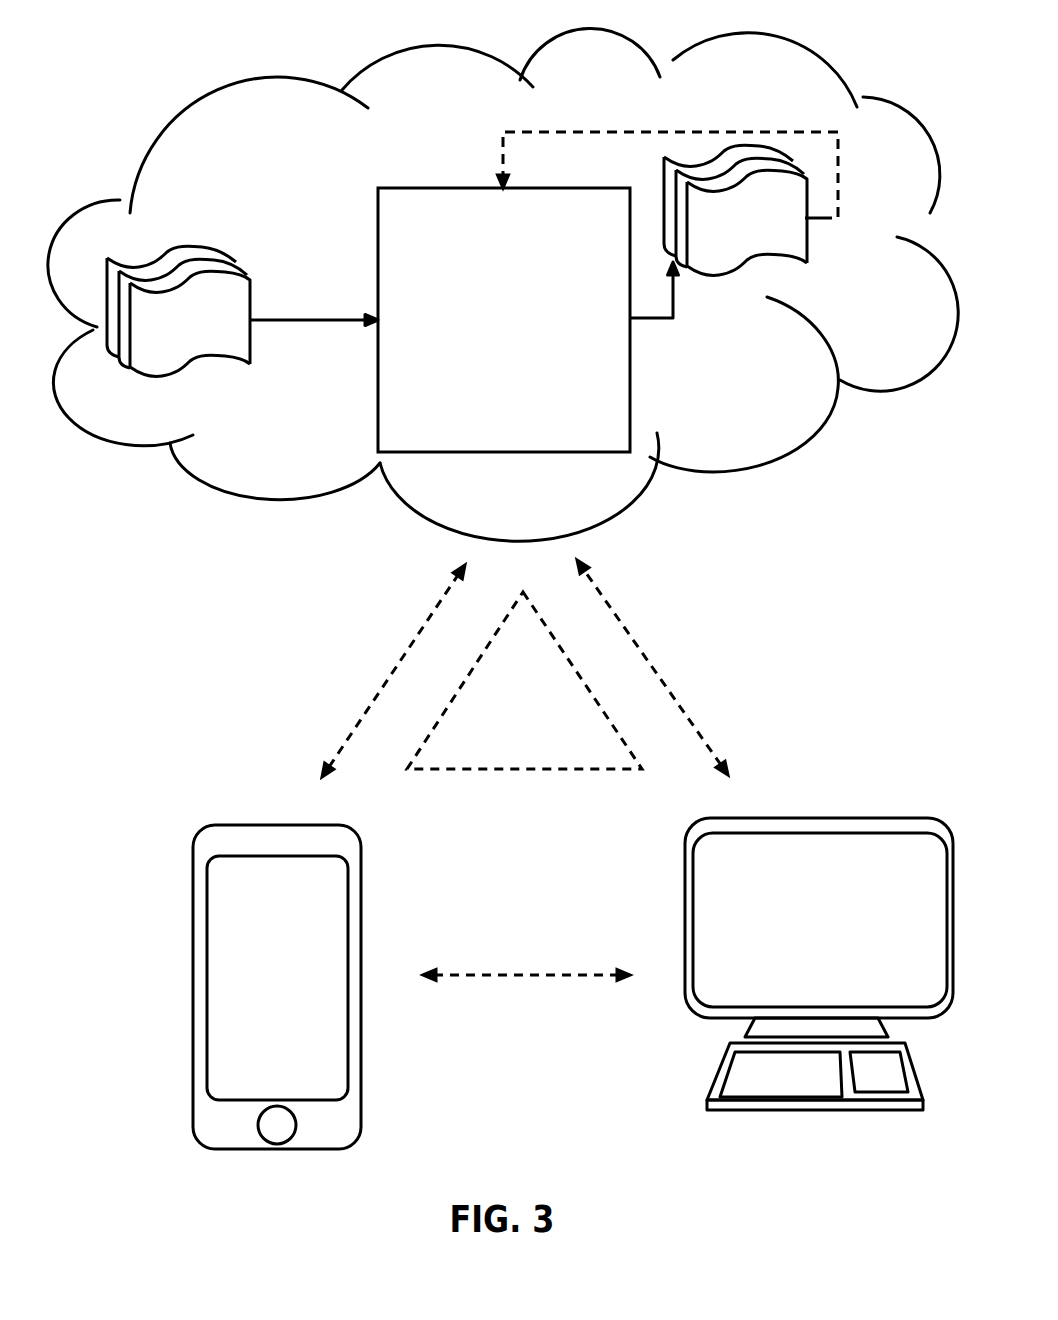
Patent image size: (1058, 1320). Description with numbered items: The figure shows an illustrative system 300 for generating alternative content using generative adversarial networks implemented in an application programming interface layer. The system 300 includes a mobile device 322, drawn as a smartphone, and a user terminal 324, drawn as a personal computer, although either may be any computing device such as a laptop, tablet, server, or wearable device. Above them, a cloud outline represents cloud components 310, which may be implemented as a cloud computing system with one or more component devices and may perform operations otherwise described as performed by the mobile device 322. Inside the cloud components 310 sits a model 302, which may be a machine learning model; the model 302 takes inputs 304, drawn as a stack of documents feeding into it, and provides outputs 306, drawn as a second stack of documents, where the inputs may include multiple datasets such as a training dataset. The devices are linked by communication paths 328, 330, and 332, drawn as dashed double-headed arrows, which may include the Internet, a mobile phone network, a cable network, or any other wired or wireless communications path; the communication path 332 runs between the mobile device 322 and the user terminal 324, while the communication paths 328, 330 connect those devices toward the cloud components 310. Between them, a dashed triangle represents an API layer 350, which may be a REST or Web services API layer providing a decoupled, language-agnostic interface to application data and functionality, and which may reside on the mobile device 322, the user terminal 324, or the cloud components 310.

The system 300 is at (480, 29).
The model 302 is at (483, 334).
The inputs 304 is at (198, 249).
The outputs 306 is at (785, 249).
The cloud components 310 is at (806, 85).
The mobile device 322 is at (264, 798).
The user terminal 324 is at (814, 804).
The communication path 328 is at (346, 650).
The communication path 330 is at (735, 618).
The communication path 332 is at (520, 937).
The API layer 350 is at (507, 704).